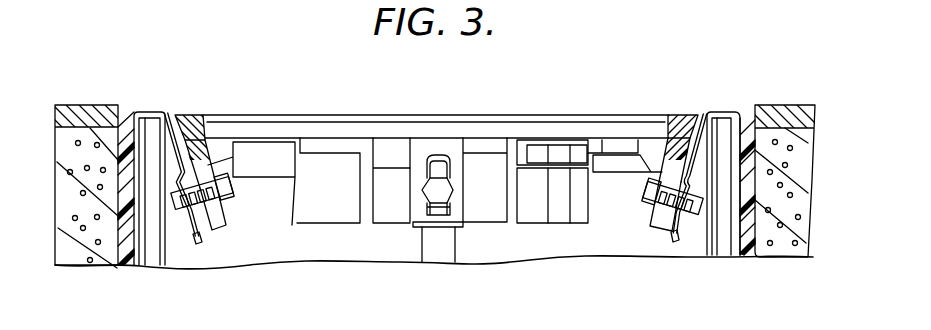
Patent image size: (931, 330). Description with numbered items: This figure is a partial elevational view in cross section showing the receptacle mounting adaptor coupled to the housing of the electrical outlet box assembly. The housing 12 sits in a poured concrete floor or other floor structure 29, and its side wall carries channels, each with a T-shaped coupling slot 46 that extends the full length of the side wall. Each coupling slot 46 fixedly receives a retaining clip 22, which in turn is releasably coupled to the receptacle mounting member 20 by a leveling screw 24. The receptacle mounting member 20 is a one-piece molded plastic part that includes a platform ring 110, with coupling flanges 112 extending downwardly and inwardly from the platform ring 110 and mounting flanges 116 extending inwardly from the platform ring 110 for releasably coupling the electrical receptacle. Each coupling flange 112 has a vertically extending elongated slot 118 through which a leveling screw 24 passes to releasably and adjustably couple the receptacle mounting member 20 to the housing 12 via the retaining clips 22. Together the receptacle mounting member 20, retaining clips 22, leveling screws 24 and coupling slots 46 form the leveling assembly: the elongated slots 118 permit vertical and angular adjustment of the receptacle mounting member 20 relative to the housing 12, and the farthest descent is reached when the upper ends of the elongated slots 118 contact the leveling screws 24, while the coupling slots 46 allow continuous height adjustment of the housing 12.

The housing 12 is at (770, 159).
The floor structure 29 is at (807, 217).
The receptacle mounting member 20 is at (670, 111).
The retaining clip 22 is at (160, 111).
The leveling screw 24 is at (454, 188).
The coupling slot 46 is at (158, 254).
The platform ring 110 is at (197, 114).
The coupling flange 112 is at (228, 210).
The mounting flange 116 is at (579, 130).
The elongated slot 118 is at (220, 232).